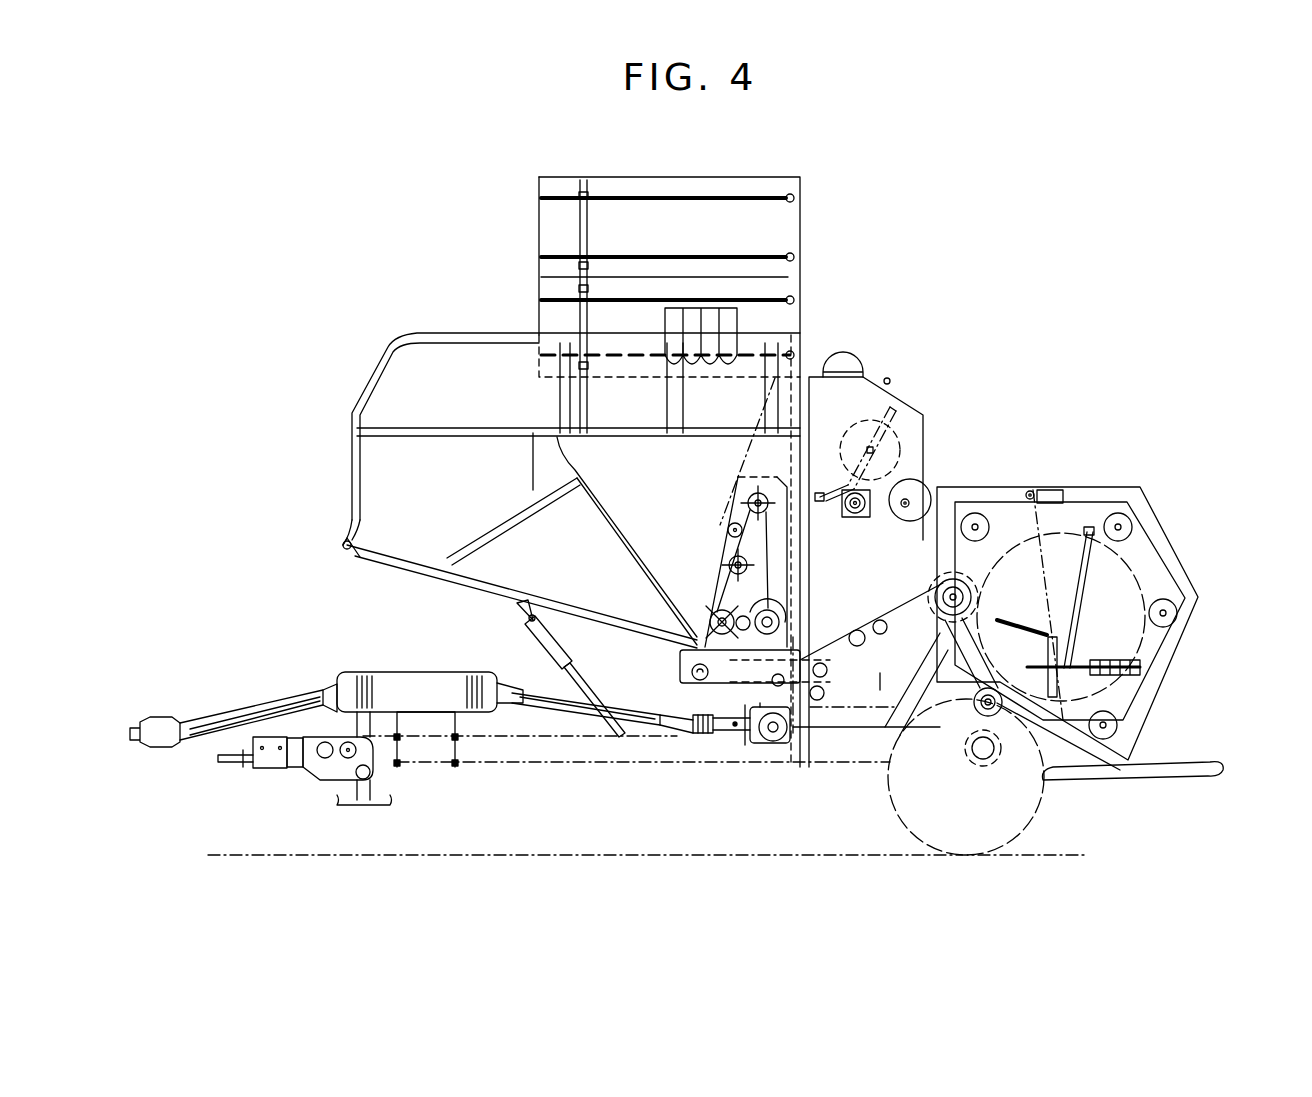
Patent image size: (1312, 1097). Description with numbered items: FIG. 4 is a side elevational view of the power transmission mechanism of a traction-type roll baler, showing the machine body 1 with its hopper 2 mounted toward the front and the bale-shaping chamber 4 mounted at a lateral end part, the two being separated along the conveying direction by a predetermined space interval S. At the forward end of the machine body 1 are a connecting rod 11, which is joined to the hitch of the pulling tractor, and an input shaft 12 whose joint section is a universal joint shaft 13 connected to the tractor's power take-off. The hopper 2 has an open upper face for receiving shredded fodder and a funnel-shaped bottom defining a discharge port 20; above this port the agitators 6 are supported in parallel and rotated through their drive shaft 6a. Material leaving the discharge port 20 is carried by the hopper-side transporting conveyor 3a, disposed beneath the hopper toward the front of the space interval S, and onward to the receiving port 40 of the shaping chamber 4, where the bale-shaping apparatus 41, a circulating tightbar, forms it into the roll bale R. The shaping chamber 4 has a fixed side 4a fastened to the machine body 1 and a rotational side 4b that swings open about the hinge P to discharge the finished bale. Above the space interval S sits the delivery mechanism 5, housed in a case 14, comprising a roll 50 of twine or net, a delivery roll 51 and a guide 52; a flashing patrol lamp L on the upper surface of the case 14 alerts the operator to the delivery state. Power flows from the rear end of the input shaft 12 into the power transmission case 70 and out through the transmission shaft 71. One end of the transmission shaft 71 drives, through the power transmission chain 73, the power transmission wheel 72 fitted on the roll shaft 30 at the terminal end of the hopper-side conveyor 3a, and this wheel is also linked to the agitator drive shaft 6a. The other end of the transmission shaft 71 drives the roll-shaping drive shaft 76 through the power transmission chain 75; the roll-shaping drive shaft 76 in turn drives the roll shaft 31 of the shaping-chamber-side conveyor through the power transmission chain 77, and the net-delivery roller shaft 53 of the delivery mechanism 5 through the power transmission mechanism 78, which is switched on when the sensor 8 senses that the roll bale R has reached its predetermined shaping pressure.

The machine body 1 is at (518, 775).
The hopper 2 is at (465, 333).
The hopper-side transporting conveyor 3a is at (720, 683).
The bale-shaping chamber 4 is at (1121, 485).
The fixed side 4a is at (1015, 487).
The rotational side 4b is at (1147, 507).
The delivery mechanism 5 is at (897, 423).
The agitators 6 is at (722, 622).
The drive shaft 6a is at (777, 607).
The sensor 8 is at (1110, 687).
The connecting rod 11 is at (270, 767).
The input shaft 12 is at (530, 683).
The universal joint shaft 13 is at (233, 703).
The case 14 is at (887, 380).
The discharge port 20 is at (680, 652).
The roll shaft 30 is at (825, 665).
The roll shaft 31 is at (990, 716).
The receiving port 40 is at (1003, 690).
The bale-shaping apparatus 41 is at (1185, 617).
The roll of twine 50 is at (867, 420).
The delivery roll 51 is at (803, 392).
The guide 52 is at (852, 520).
The net-delivery roller shaft 53 is at (915, 480).
The power transmission case 70 is at (770, 747).
The power transmission shaft 71 is at (773, 741).
The power transmission wheel 72 is at (847, 707).
The power transmission chain 73 is at (798, 662).
The power transmission chain 75 is at (880, 690).
The roll-shaping drive shaft 76 is at (930, 590).
The power transmission chain 77 is at (950, 652).
The power transmission mechanism 78 is at (945, 585).
The patrol lamp L is at (845, 490).
The hinge P is at (1033, 492).
The roll bale R is at (1137, 580).
The space interval S is at (960, 497).